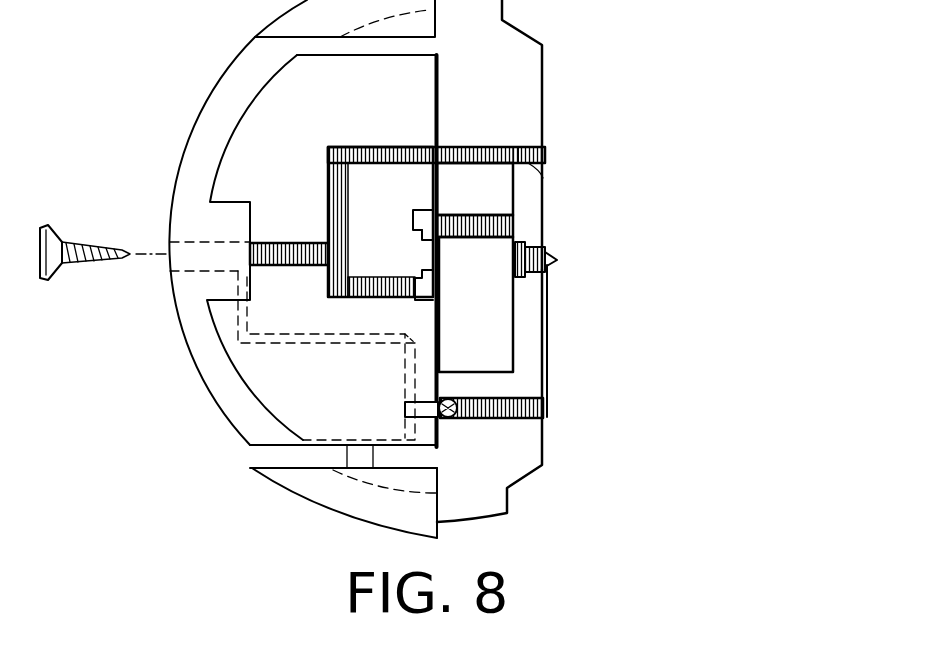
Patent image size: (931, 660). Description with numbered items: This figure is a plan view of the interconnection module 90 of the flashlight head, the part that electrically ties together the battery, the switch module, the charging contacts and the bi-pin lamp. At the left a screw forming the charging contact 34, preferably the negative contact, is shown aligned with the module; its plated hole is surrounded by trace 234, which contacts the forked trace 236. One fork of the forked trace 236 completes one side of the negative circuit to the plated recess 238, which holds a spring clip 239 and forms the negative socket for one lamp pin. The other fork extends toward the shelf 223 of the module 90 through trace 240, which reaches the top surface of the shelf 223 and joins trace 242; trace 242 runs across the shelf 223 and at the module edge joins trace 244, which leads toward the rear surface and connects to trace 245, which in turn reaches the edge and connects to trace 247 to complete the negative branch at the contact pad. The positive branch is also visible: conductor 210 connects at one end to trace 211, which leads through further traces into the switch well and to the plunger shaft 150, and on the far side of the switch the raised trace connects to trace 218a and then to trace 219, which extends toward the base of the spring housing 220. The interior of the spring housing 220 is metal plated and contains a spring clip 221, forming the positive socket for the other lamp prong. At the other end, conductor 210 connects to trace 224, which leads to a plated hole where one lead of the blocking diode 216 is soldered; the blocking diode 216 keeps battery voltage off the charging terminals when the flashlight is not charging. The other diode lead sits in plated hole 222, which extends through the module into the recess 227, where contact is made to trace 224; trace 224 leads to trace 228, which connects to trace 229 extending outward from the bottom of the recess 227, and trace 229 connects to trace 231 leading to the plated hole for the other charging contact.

The interconnection module 90 is at (647, 130).
The charging contact 34 is at (67, 263).
The plunger shaft 150 is at (552, 250).
The conductor 210 is at (548, 352).
The trace 211 is at (556, 270).
The blocking diode 216 is at (452, 418).
The trace 218a is at (515, 222).
The trace 219 is at (455, 189).
The spring housing 220 is at (407, 213).
The spring clip 221 is at (415, 233).
The plated hole 222 is at (427, 420).
The shelf 223 is at (503, 366).
The trace 224 is at (517, 420).
The recess 227 is at (342, 409).
The trace 228 is at (403, 345).
The trace 229 is at (262, 343).
The trace 231 is at (235, 313).
The trace 234 is at (262, 228).
The forked trace 236 is at (340, 147).
The recess 238 is at (446, 272).
The spring clip 239 is at (437, 303).
The trace 240 is at (441, 128).
The trace 242 is at (480, 145).
The trace 244 is at (542, 105).
The trace 245 is at (543, 178).
The trace 247 is at (529, 160).